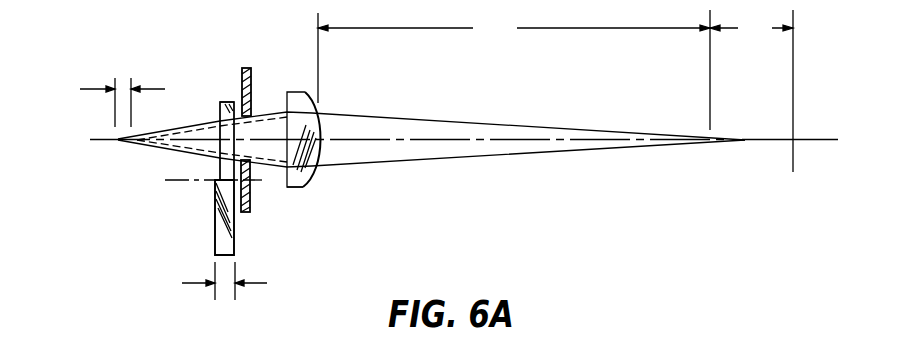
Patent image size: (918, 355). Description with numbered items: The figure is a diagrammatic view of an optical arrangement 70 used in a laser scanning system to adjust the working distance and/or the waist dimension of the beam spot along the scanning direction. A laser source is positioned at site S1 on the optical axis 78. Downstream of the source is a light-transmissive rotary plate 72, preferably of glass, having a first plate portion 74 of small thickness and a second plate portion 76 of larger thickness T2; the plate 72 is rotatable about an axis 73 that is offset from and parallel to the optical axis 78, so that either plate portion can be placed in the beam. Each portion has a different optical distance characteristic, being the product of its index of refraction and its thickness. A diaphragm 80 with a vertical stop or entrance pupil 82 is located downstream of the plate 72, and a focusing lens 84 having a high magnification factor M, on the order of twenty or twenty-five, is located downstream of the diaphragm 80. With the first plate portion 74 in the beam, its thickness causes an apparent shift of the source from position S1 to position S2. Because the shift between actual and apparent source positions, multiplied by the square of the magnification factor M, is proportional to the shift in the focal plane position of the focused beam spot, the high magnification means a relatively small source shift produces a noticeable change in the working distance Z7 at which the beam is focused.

The optical arrangement 70 is at (217, 61).
The first plate portion 74 is at (223, 103).
The second plate portion 76 is at (214, 236).
The light-transmissive rotary plate 72 is at (188, 221).
The axis 73 is at (180, 177).
The diaphragm 80 is at (248, 67).
The vertical stop or entrance pupil 82 is at (253, 117).
The focusing lens 84 is at (296, 180).
The optical axis 78 is at (828, 139).
The magnification factor M is at (295, 100).
The laser source position S1 is at (118, 142).
The apparent source position S2 is at (137, 142).
The thickness of second plate portion T2 is at (223, 290).
The working distance Z7 is at (514, 70).